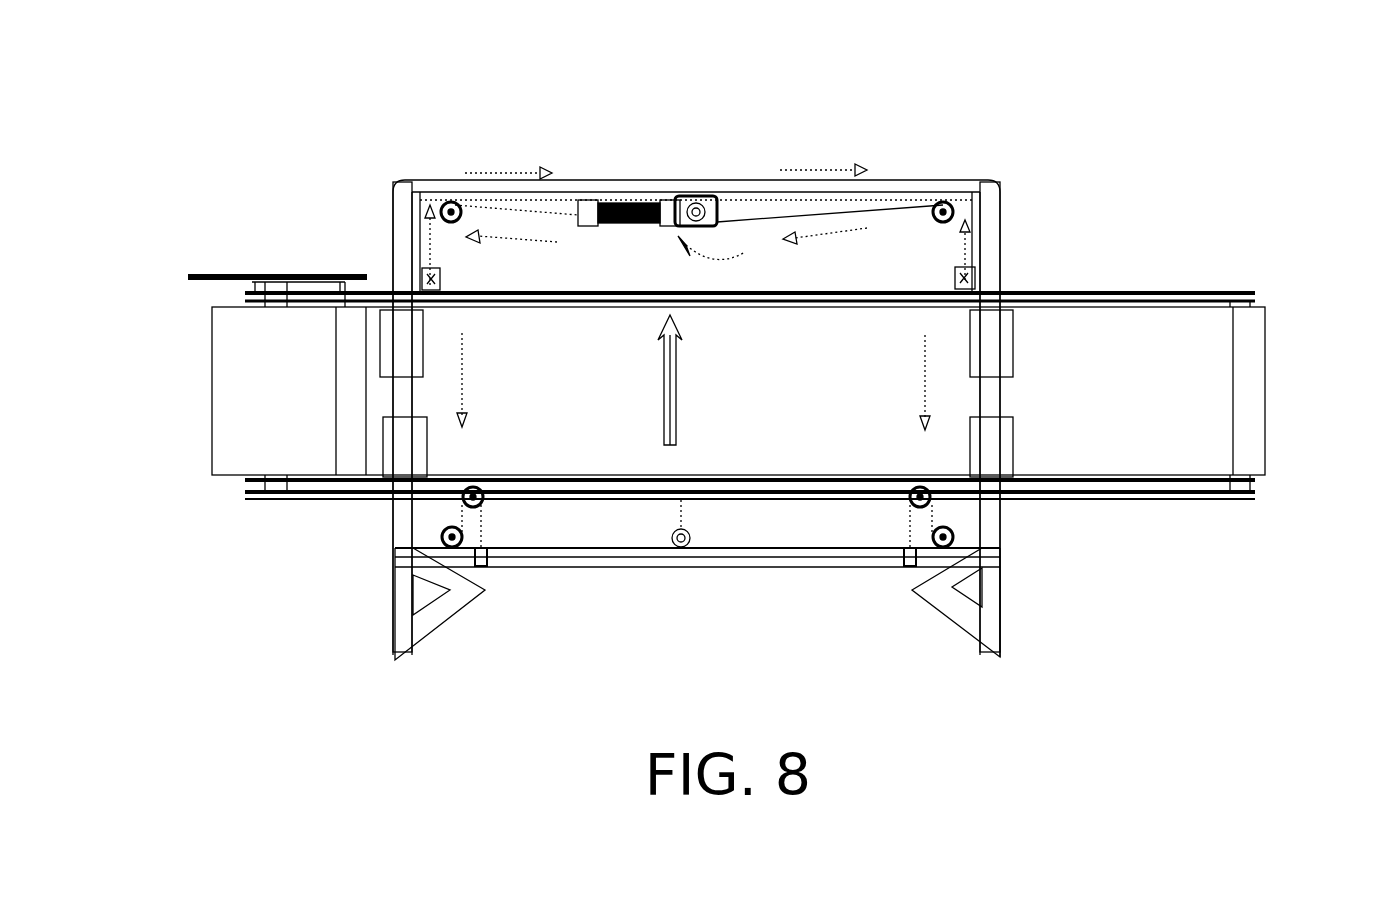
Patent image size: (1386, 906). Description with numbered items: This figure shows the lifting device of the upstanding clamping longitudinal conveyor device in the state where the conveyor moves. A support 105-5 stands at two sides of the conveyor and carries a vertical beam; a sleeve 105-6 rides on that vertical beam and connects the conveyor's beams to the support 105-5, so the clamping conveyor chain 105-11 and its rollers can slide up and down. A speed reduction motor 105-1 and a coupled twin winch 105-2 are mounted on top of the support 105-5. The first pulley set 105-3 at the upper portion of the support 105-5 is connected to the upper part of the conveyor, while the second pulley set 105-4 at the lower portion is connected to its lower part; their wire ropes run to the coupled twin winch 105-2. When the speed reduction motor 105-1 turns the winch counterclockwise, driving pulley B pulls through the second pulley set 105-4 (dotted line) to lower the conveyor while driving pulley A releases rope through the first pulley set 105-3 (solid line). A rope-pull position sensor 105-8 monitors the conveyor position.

The speed reduction motor 105-1 is at (655, 200).
The coupled twin winch 105-2 is at (720, 195).
The first pulley set 105-3 is at (410, 285).
The second pulley set 105-4 is at (500, 570).
The support 105-5 is at (400, 515).
The sleeve 105-6 is at (380, 345).
The rope-pull position sensor 105-8 is at (690, 548).
The clamping conveyor chain 105-11 is at (1100, 355).